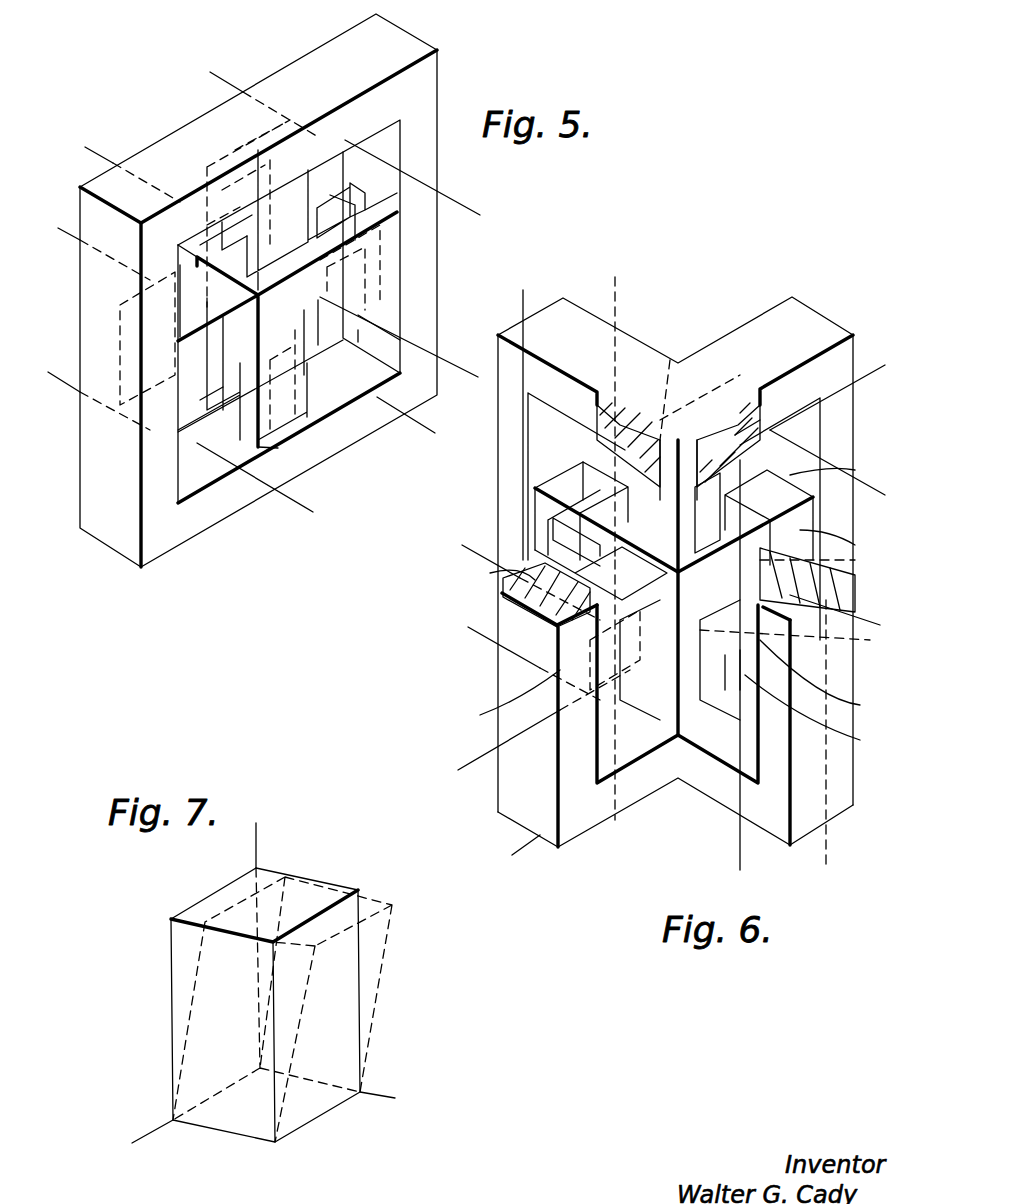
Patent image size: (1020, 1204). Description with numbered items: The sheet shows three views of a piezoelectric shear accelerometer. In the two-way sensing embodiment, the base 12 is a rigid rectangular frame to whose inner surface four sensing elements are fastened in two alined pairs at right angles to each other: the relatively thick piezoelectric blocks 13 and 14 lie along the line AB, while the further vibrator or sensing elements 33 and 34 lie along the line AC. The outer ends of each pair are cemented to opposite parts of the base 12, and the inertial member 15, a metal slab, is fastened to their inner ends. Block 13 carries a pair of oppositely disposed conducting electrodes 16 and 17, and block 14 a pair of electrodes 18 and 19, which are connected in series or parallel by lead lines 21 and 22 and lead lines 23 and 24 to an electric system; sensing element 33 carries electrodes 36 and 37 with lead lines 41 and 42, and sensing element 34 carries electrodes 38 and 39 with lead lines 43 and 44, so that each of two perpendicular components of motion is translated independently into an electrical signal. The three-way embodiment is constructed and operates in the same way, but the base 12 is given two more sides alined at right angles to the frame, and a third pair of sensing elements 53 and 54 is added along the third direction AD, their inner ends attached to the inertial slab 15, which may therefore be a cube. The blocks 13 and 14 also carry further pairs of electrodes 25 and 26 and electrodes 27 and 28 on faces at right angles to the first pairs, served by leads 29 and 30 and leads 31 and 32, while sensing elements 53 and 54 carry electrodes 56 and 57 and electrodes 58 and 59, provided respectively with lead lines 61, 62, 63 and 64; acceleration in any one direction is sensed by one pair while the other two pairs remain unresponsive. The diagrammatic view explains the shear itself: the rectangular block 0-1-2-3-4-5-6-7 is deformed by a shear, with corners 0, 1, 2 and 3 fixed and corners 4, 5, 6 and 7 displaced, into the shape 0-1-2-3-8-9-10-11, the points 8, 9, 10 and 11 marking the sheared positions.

In FIG. 5, the base 12 is at (440, 80).
In FIG. 6, the base 12 is at (848, 372).
In FIG. 5, the piezoelectric block 13 is at (306, 184).
In FIG. 6, the piezoelectric block 13 is at (692, 445).
In FIG. 5, the piezoelectric block 14 is at (305, 388).
In FIG. 6, the piezoelectric block 14 is at (678, 778).
In FIG. 5, the inertial member 15 is at (318, 318).
In FIG. 6, the inertial member 15 is at (672, 680).
In FIG. 5, the conducting electrode 16 is at (228, 232).
In FIG. 6, the conducting electrode 16 is at (590, 544).
In FIG. 5, the conducting electrode 17 is at (272, 178).
In FIG. 5, the conducting electrode 18 is at (230, 425).
In FIG. 5, the conducting electrode 19 is at (277, 383).
In FIG. 5, the lead line 21 is at (100, 148).
In FIG. 5, the lead line 22 is at (220, 82).
In FIG. 5, the lead line 23 is at (303, 510).
In FIG. 5, the lead line 24 is at (428, 430).
In FIG. 6, the electrode 25 is at (765, 428).
In FIG. 6, the electrode 26 is at (672, 362).
In FIG. 6, the electrode 27 is at (740, 690).
In FIG. 6, the electrode 28 is at (615, 820).
In FIG. 6, the lead 29 is at (883, 392).
In FIG. 6, the lead 30 is at (822, 300).
In FIG. 6, the lead 31 is at (525, 838).
In FIG. 6, the lead 32 is at (532, 720).
In FIG. 5, the sensing element 33 is at (365, 280).
In FIG. 6, the sensing element 33 is at (847, 542).
In FIG. 5, the sensing element 34 is at (203, 395).
In FIG. 6, the sensing element 34 is at (501, 698).
In FIG. 5, the electrode 36 is at (355, 225).
In FIG. 6, the electrode 36 is at (839, 468).
In FIG. 5, the electrode 37 is at (358, 340).
In FIG. 6, the electrode 37 is at (855, 563).
In FIG. 5, the electrode 38 is at (188, 295).
In FIG. 6, the electrode 38 is at (494, 573).
In FIG. 5, the electrode 39 is at (120, 322).
In FIG. 6, the electrode 39 is at (590, 700).
In FIG. 5, the lead line 41 is at (418, 177).
In FIG. 6, the lead line 41 is at (834, 471).
In FIG. 5, the lead line 42 is at (400, 337).
In FIG. 6, the lead line 42 is at (842, 607).
In FIG. 5, the lead line 43 is at (58, 230).
In FIG. 6, the lead line 43 is at (522, 573).
In FIG. 5, the lead line 44 is at (91, 401).
In FIG. 6, the lead line 44 is at (522, 663).
In FIG. 6, the sensing element 53 is at (820, 715).
In FIG. 6, the sensing element 54 is at (548, 522).
In FIG. 6, the electrode 56 is at (827, 680).
In FIG. 6, the electrode 57 is at (796, 575).
In FIG. 6, the electrode 58 is at (555, 550).
In FIG. 6, the electrode 59 is at (583, 462).
In FIG. 6, the lead line 61 is at (740, 860).
In FIG. 6, the lead line 62 is at (826, 860).
In FIG. 6, the lead line 63 is at (523, 295).
In FIG. 6, the lead line 64 is at (615, 282).
In FIG. 7, the block corner 0 is at (254, 1085).
In FIG. 7, the block corner 1 is at (168, 1136).
In FIG. 7, the block corner 2 is at (266, 1155).
In FIG. 7, the block corner 3 is at (356, 1107).
In FIG. 7, the block corner 4 is at (242, 861).
In FIG. 7, the block corner 5 is at (256, 1005).
In FIG. 7, the block corner 6 is at (276, 935).
In FIG. 7, the block corner 7 is at (358, 890).
In FIG. 7, the sheared block corner 8 is at (285, 877).
In FIG. 7, the sheared block corner 9 is at (205, 922).
In FIG. 7, the sheared block corner 10 is at (312, 946).
In FIG. 7, the sheared block corner 11 is at (392, 905).